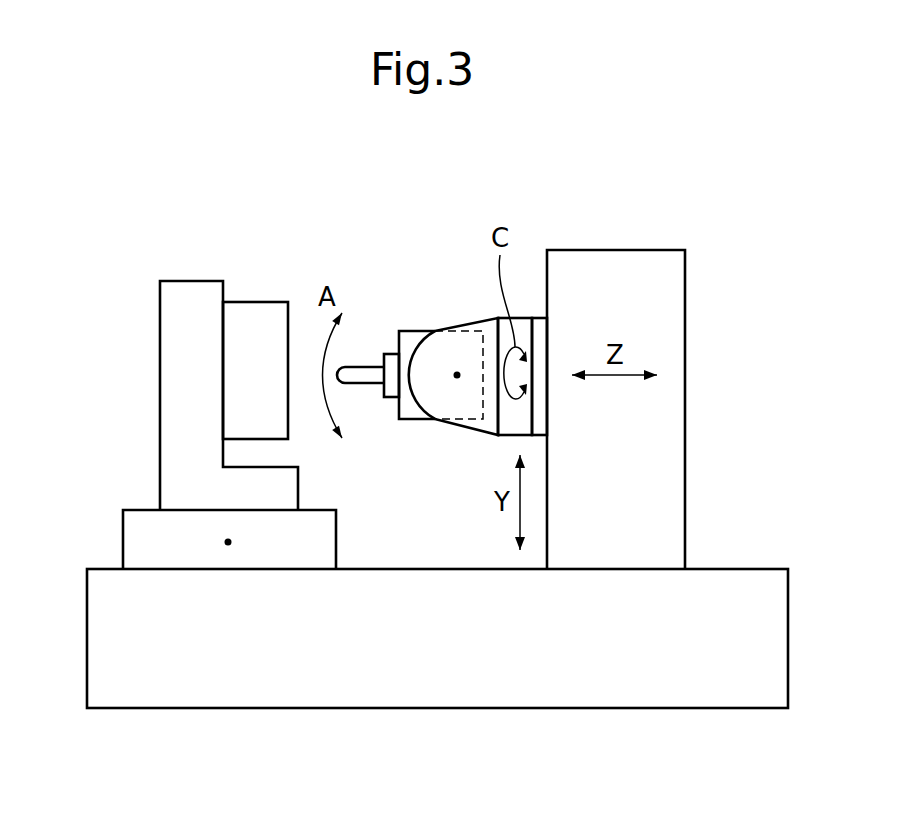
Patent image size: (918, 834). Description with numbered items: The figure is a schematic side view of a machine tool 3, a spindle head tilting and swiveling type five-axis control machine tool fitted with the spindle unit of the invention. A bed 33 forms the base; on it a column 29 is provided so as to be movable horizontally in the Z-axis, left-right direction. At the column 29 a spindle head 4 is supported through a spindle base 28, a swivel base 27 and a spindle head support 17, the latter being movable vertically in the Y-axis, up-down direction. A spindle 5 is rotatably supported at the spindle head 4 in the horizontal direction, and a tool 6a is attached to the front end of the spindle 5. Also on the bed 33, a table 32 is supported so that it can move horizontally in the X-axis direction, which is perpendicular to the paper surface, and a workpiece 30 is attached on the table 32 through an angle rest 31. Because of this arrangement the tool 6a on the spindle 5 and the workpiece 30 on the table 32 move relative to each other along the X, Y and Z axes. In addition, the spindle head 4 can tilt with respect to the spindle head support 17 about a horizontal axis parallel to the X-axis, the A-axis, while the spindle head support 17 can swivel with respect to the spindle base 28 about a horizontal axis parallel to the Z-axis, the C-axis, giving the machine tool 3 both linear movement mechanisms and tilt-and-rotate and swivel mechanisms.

The machine tool 3 is at (685, 205).
The spindle head 4 is at (417, 340).
The spindle 5 is at (392, 397).
The tool 6a is at (362, 367).
The spindle head support 17 is at (486, 322).
The swivel base 27 is at (527, 325).
The spindle base 28 is at (542, 333).
The column 29 is at (672, 307).
The workpiece 30 is at (257, 315).
The angle rest 31 is at (185, 366).
The table 32 is at (148, 535).
The bed 33 is at (112, 628).